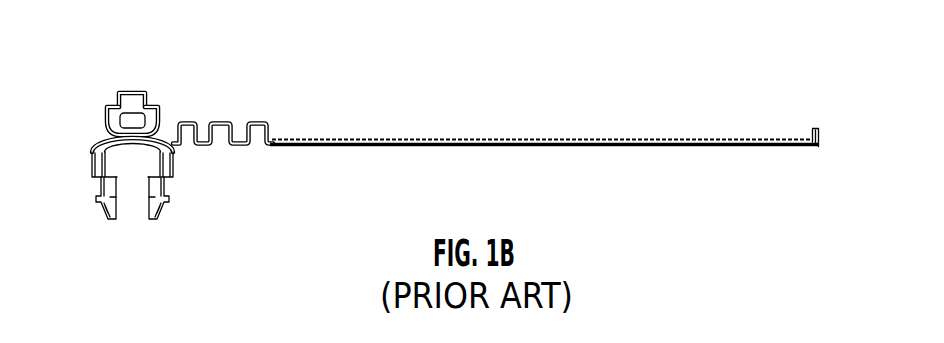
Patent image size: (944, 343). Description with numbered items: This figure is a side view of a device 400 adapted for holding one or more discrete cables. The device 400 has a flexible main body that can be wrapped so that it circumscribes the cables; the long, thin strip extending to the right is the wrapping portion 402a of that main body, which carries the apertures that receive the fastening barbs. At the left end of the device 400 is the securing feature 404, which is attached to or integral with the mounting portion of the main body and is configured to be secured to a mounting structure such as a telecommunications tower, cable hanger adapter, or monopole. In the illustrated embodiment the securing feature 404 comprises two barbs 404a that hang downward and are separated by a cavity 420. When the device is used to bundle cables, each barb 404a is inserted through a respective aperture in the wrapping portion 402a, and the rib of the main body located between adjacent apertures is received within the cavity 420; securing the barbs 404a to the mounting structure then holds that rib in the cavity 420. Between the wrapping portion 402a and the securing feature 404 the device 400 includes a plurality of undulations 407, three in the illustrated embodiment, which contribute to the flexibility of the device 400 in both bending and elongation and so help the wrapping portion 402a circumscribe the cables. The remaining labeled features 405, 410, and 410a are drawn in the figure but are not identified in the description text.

The device 400 is at (151, 30).
The wrapping portion 402a is at (674, 138).
The securing feature 404 is at (78, 189).
The barbs 404a is at (105, 217).
The arch / side panels 405 is at (112, 172).
The undulations 407 is at (258, 124).
The retaining tab 410 is at (158, 110).
The tab stem 410a is at (128, 91).
The cavity 420 is at (126, 219).